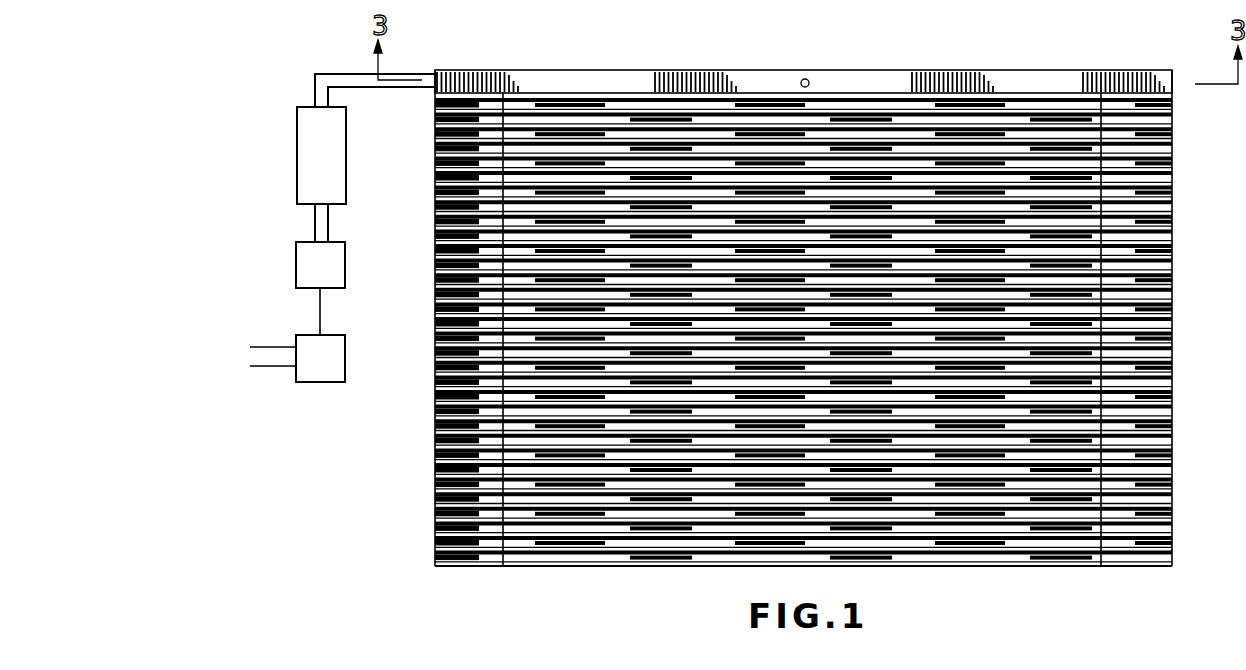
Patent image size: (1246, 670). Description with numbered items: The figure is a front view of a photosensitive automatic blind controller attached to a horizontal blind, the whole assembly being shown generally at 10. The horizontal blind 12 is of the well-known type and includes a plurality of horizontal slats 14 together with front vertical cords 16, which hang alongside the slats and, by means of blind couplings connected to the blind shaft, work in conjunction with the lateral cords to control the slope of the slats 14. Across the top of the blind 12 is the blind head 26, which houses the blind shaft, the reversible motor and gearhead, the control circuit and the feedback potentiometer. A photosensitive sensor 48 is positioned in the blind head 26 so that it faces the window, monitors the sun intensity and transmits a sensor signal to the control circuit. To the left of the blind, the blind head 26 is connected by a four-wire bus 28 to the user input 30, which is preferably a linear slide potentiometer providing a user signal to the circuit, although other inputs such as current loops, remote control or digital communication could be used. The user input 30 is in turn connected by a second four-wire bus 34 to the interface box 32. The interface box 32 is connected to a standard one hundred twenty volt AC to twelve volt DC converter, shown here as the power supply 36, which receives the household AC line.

The photosensitive automatic blind controller and blind 10 is at (1056, 62).
The horizontal blind 12 is at (435, 457).
The horizontal slats 14 is at (435, 537).
The front vertical cords 16 is at (503, 540).
The blind head 26 is at (638, 80).
The 4-wire bus 28 is at (338, 78).
The user input 30 is at (305, 137).
The interface box 32 is at (307, 272).
The 4-wire bus 34 is at (315, 222).
The power supply 36 is at (334, 368).
The photosensitive sensor 48 is at (807, 79).